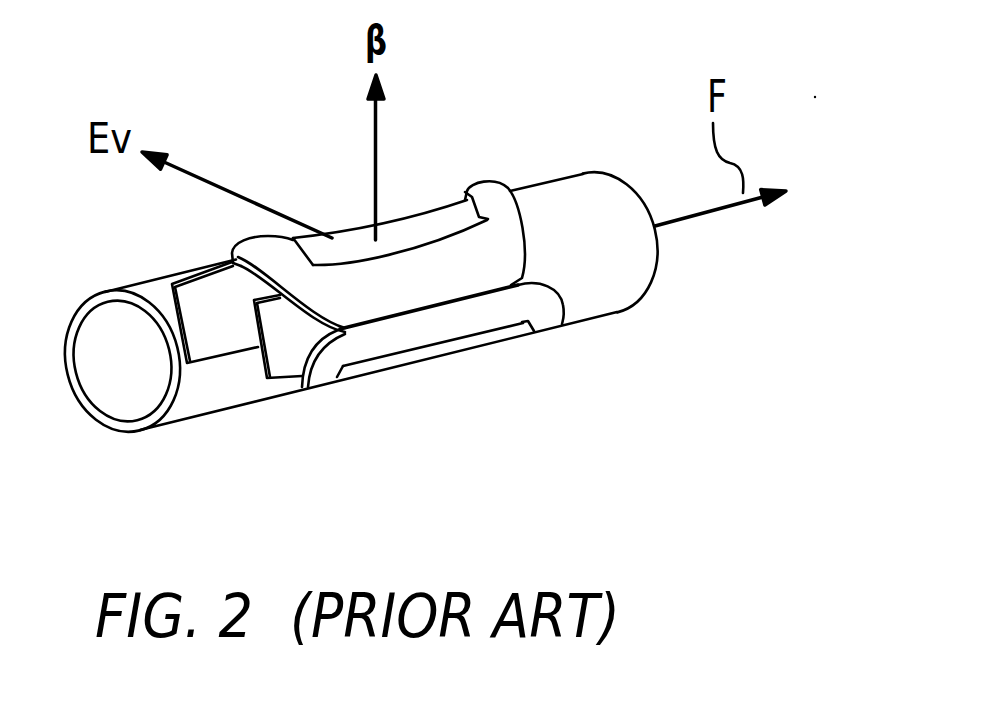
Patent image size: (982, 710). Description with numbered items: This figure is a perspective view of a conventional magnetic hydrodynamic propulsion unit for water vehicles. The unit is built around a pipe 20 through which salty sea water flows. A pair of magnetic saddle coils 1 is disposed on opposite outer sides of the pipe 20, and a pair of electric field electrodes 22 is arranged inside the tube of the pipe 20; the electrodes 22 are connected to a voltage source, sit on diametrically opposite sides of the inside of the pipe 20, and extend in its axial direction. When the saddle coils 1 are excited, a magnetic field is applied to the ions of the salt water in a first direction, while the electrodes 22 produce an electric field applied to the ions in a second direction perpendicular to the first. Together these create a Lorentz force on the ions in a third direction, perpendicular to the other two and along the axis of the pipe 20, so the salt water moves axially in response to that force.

The magnetic saddle coil 1 is at (418, 283).
The pipe 20 is at (625, 295).
The electric field electrode 22 is at (223, 350).